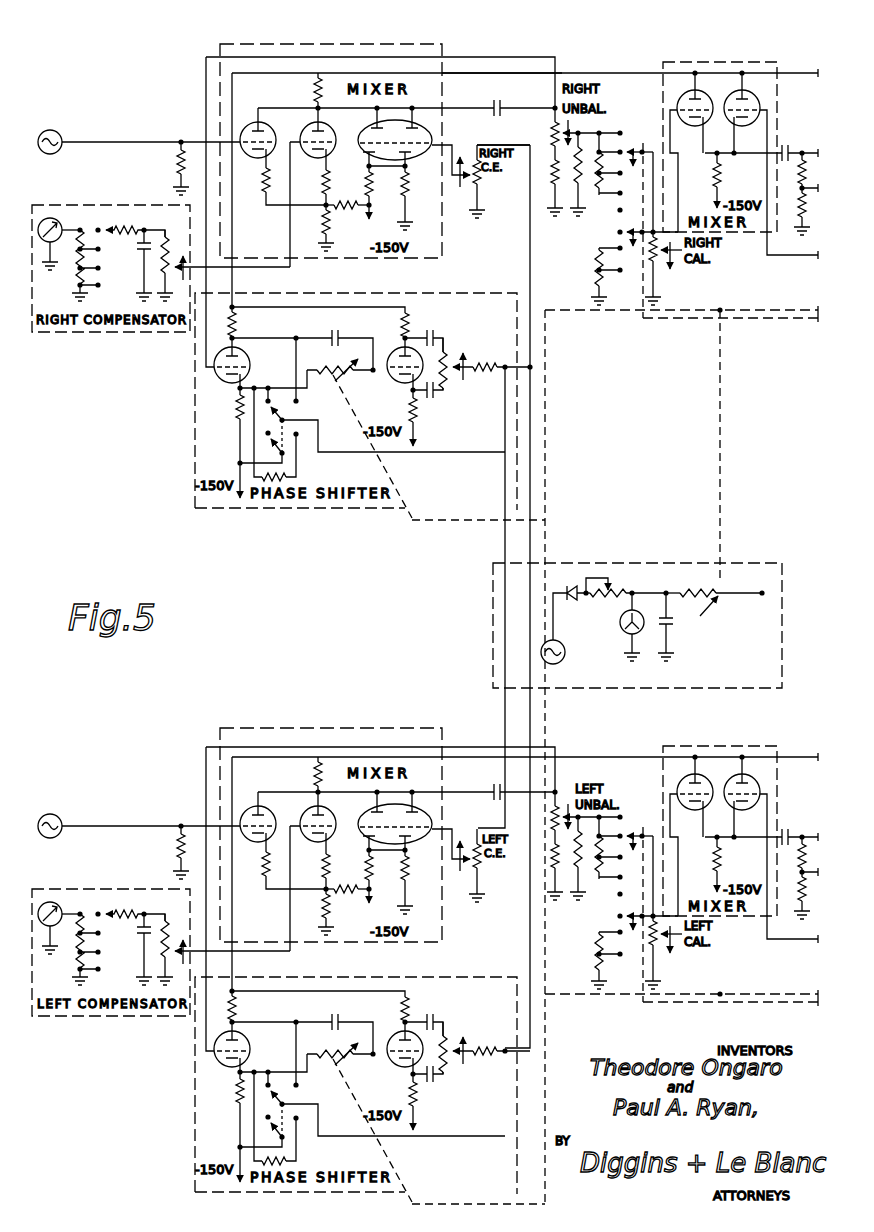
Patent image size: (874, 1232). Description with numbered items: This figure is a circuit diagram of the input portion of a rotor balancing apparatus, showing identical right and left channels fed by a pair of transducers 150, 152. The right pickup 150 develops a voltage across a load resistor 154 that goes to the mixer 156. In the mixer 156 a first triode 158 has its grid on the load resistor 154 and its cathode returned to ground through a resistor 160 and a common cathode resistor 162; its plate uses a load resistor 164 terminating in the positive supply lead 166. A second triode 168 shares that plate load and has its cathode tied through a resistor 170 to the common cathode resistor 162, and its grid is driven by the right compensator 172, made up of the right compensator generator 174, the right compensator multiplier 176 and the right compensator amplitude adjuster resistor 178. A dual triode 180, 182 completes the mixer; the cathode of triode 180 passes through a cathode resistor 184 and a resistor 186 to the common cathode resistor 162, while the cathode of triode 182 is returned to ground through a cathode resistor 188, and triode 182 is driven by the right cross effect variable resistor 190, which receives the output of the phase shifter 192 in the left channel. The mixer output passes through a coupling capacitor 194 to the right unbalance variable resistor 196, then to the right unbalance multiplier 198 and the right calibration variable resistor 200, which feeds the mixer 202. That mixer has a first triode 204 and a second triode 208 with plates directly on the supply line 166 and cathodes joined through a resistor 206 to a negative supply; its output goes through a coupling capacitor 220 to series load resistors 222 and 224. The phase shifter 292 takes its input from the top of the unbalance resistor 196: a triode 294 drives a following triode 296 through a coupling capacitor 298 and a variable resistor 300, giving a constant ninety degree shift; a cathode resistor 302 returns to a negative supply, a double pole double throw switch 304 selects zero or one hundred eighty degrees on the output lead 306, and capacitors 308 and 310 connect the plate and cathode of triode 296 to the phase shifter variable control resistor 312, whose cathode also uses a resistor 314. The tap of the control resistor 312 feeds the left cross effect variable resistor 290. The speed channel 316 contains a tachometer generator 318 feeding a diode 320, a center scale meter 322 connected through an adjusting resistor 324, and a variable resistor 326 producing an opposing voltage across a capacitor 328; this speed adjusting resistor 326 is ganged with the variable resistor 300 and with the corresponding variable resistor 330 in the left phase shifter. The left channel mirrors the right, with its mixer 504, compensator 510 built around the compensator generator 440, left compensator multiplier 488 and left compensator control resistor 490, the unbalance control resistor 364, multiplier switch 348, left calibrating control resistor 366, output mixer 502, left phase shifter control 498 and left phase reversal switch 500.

The transducer 150 is at (58, 132).
The transducer 152 is at (58, 816).
The load resistor 154 is at (176, 160).
The mixer 156 is at (328, 45).
The first triode 158 is at (263, 135).
The resistor 160 is at (265, 197).
The common cathode resistor 162 is at (322, 210).
The load resistor 164 is at (312, 92).
The positive supply lead 166 is at (517, 73).
The second triode 168 is at (327, 135).
The resistor 170 is at (328, 195).
The right compensator 172 is at (87, 205).
The right compensator generator 174 is at (50, 217).
The right compensator multiplier 176 is at (72, 262).
The right compensator amplitude adjuster resistor 178 is at (184, 252).
The triode 180 is at (368, 154).
The triode 182 is at (432, 131).
The cathode resistor 184 is at (372, 195).
The resistor 186 is at (330, 222).
The cathode resistor 188 is at (410, 192).
The right cross effect variable resistor 190 is at (483, 183).
The phase shifter 192 is at (450, 975).
The coupling capacitor 194 is at (503, 106).
The right unbalance variable resistor 196 is at (551, 132).
The right unbalance multiplier 198 is at (624, 142).
The right calibration variable resistor 200 is at (660, 262).
The mixer 202 is at (725, 62).
The first triode 204 is at (684, 95).
The resistor 206 is at (722, 178).
The second triode 208 is at (760, 92).
The coupling capacitor 220 is at (780, 160).
The load resistor 222 is at (804, 158).
The load resistor 224 is at (768, 235).
The left cross effect variable resistor 290 is at (484, 865).
The phase shifter 292 is at (462, 290).
The triode 294 is at (250, 360).
The triode 296 is at (410, 346).
The coupling capacitor 298 is at (342, 338).
The variable resistor 300 is at (358, 374).
The cathode resistor 302 is at (238, 410).
The double pole double throw switch 304 is at (284, 428).
The output lead 306 is at (372, 452).
The capacitor 308 is at (436, 340).
The capacitor 310 is at (436, 398).
The phase shifter variable control resistor 312 is at (453, 378).
The resistor 314 is at (236, 322).
The speed channel 316 is at (667, 692).
The tachometer generator 318 is at (566, 648).
The diode 320 is at (568, 590).
The center scale meter 322 is at (620, 620).
The adjusting resistor 324 is at (640, 584).
The variable resistor 326 is at (720, 600).
The capacitor 328 is at (671, 622).
The variable resistor 330 is at (362, 1060).
The multiplier switch 348 is at (628, 866).
The unbalance control resistor 364 is at (558, 803).
The left calibrating control resistor 366 is at (664, 946).
The compensator generator 440 is at (50, 901).
The left compensator multiplier 488 is at (78, 984).
The left compensator control resistor 490 is at (183, 936).
The left phase shifter control 498 is at (453, 1062).
The left phase reversal switch 500 is at (287, 1112).
The mixer 502 is at (735, 748).
The mixer 504 is at (328, 729).
The compensator 510 is at (135, 888).